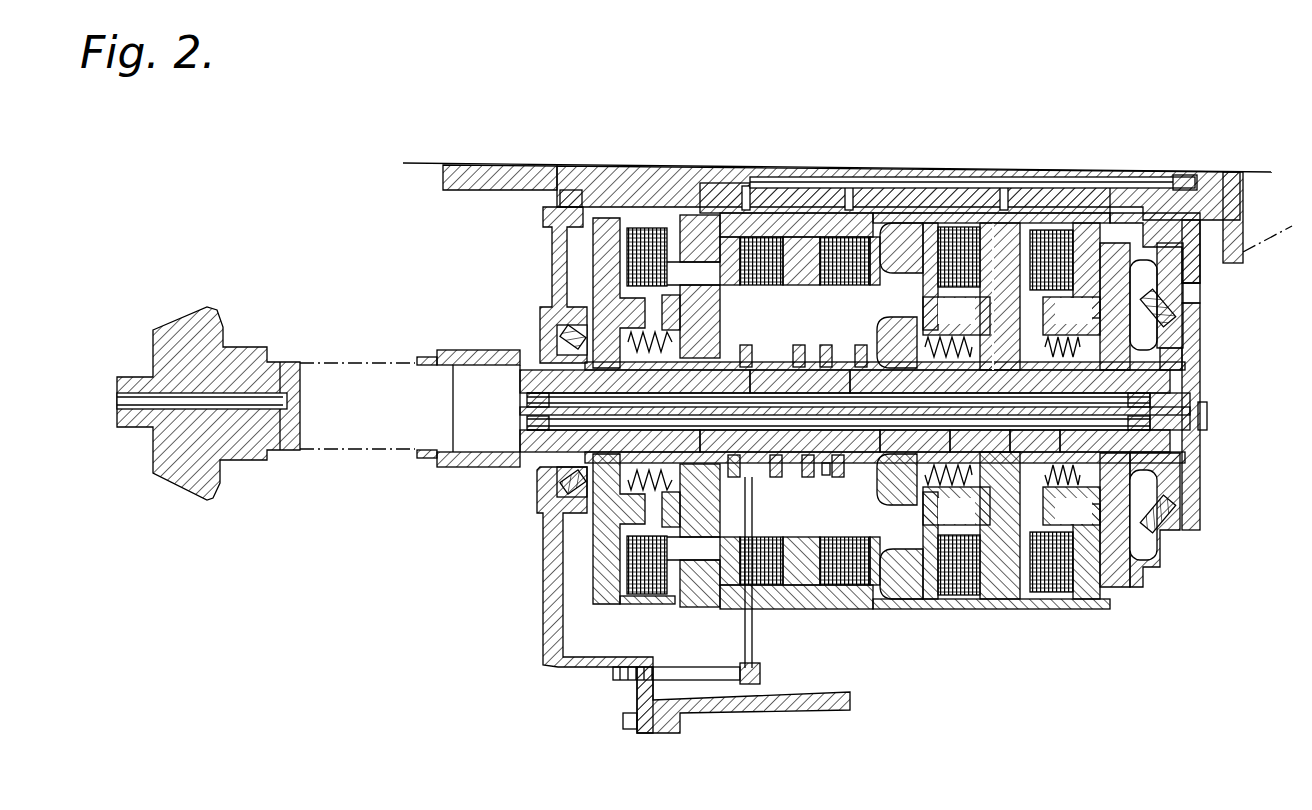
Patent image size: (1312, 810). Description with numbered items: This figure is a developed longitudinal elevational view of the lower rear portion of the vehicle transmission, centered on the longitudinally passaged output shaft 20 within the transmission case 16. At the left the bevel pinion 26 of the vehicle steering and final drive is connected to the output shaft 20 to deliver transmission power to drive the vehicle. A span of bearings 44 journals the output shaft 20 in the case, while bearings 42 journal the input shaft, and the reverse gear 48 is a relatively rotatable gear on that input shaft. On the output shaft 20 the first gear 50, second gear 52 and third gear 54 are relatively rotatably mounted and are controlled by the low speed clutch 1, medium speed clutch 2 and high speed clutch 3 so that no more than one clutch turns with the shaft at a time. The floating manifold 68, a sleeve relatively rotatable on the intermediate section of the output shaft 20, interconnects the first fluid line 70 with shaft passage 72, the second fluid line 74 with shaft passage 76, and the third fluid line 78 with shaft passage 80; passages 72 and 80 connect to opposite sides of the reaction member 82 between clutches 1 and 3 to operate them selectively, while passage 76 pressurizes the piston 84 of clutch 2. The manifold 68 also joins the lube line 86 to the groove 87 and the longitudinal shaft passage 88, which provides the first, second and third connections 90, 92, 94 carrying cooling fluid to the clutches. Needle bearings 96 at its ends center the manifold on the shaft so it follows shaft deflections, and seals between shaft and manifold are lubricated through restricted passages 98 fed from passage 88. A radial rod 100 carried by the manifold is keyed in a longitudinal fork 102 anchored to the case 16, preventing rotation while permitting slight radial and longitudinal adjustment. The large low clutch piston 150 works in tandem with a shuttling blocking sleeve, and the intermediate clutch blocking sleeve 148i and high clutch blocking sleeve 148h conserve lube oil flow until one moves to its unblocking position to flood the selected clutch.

The low speed clutch 1 is at (1060, 605).
The medium speed clutch 2 is at (632, 602).
The high speed clutch 3 is at (920, 571).
The transmission case 16 is at (1200, 290).
The output shaft 20 is at (522, 365).
The bevel pinion 26 is at (190, 340).
The bearings 42 is at (556, 200).
The bearings 44 is at (548, 345).
The reverse gear 48 is at (1035, 442).
The first gear 50 is at (1200, 322).
The second gear 52 is at (697, 537).
The third gear 54 is at (885, 326).
The floating manifold 68 is at (808, 470).
The first fluid line 70 is at (812, 324).
The shaft passage 72 is at (1010, 381).
The second fluid line 74 is at (763, 343).
The shaft passage 76 is at (778, 381).
The third fluid line 78 is at (798, 345).
The shaft passage 80 is at (940, 345).
The reaction member 82 is at (1048, 332).
The piston 84 is at (650, 497).
The lube line 86 is at (831, 462).
The groove 87 is at (822, 460).
The longitudinal shaft passage 88 is at (790, 441).
The first connection 90 is at (1115, 442).
The second connection 92 is at (610, 441).
The third connection 94 is at (915, 442).
The needle bearings 96 is at (747, 344).
The restricted passages 98 is at (776, 466).
The radial rod 100 is at (744, 597).
The fork 102 is at (688, 670).
The high clutch blocking sleeve 148h is at (980, 442).
The intermediate clutch blocking sleeve 148i is at (635, 381).
The low clutch piston 150 is at (1103, 213).